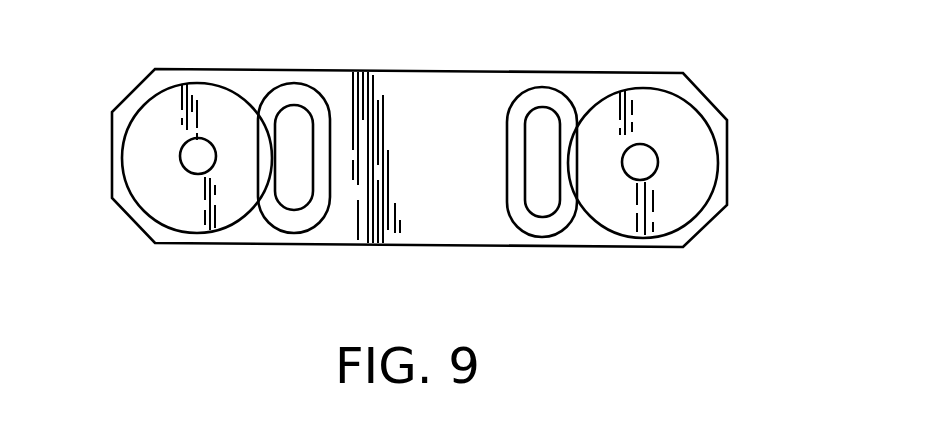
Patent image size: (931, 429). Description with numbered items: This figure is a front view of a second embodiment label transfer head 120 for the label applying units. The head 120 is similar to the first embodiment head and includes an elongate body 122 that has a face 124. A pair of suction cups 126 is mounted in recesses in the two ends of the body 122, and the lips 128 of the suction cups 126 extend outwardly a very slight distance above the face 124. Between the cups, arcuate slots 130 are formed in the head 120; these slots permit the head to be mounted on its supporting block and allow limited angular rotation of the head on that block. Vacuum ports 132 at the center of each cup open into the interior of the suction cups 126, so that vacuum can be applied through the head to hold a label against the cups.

The label transfer head 120 is at (717, 78).
The elongate body 122 is at (472, 72).
The face 124 is at (435, 208).
The suction cups 126 is at (162, 207).
The lips 128 is at (243, 100).
The arcuate slots 130 is at (530, 160).
The vacuum ports 132 is at (182, 153).